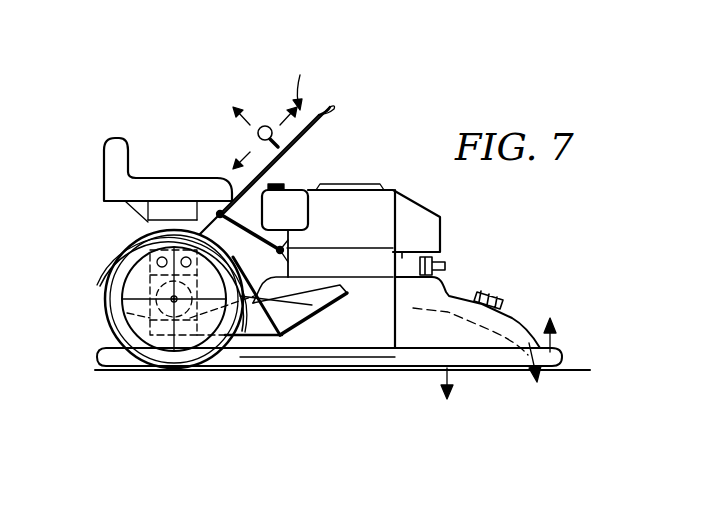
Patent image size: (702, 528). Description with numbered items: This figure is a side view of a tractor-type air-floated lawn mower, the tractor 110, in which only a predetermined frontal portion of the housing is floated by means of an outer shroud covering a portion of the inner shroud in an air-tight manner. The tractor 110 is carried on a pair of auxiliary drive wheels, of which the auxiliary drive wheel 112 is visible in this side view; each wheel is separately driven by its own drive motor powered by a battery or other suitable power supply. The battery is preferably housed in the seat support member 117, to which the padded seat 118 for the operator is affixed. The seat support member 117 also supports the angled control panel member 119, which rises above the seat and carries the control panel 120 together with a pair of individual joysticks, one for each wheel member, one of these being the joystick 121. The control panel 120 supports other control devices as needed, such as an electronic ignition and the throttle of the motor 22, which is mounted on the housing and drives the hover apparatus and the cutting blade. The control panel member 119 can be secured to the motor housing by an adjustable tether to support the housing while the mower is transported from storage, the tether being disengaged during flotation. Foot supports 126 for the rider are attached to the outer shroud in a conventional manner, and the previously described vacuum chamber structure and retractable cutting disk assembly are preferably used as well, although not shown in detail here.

The tractor 110 is at (531, 254).
The auxiliary drive wheel 112 is at (108, 290).
The seat support member 117 is at (152, 224).
The padded seat 118 is at (132, 167).
The angled control panel member 119 is at (317, 128).
The control panel 120 is at (304, 81).
The joystick 121 is at (263, 127).
The motor 22 is at (397, 188).
The foot supports 126 is at (308, 303).